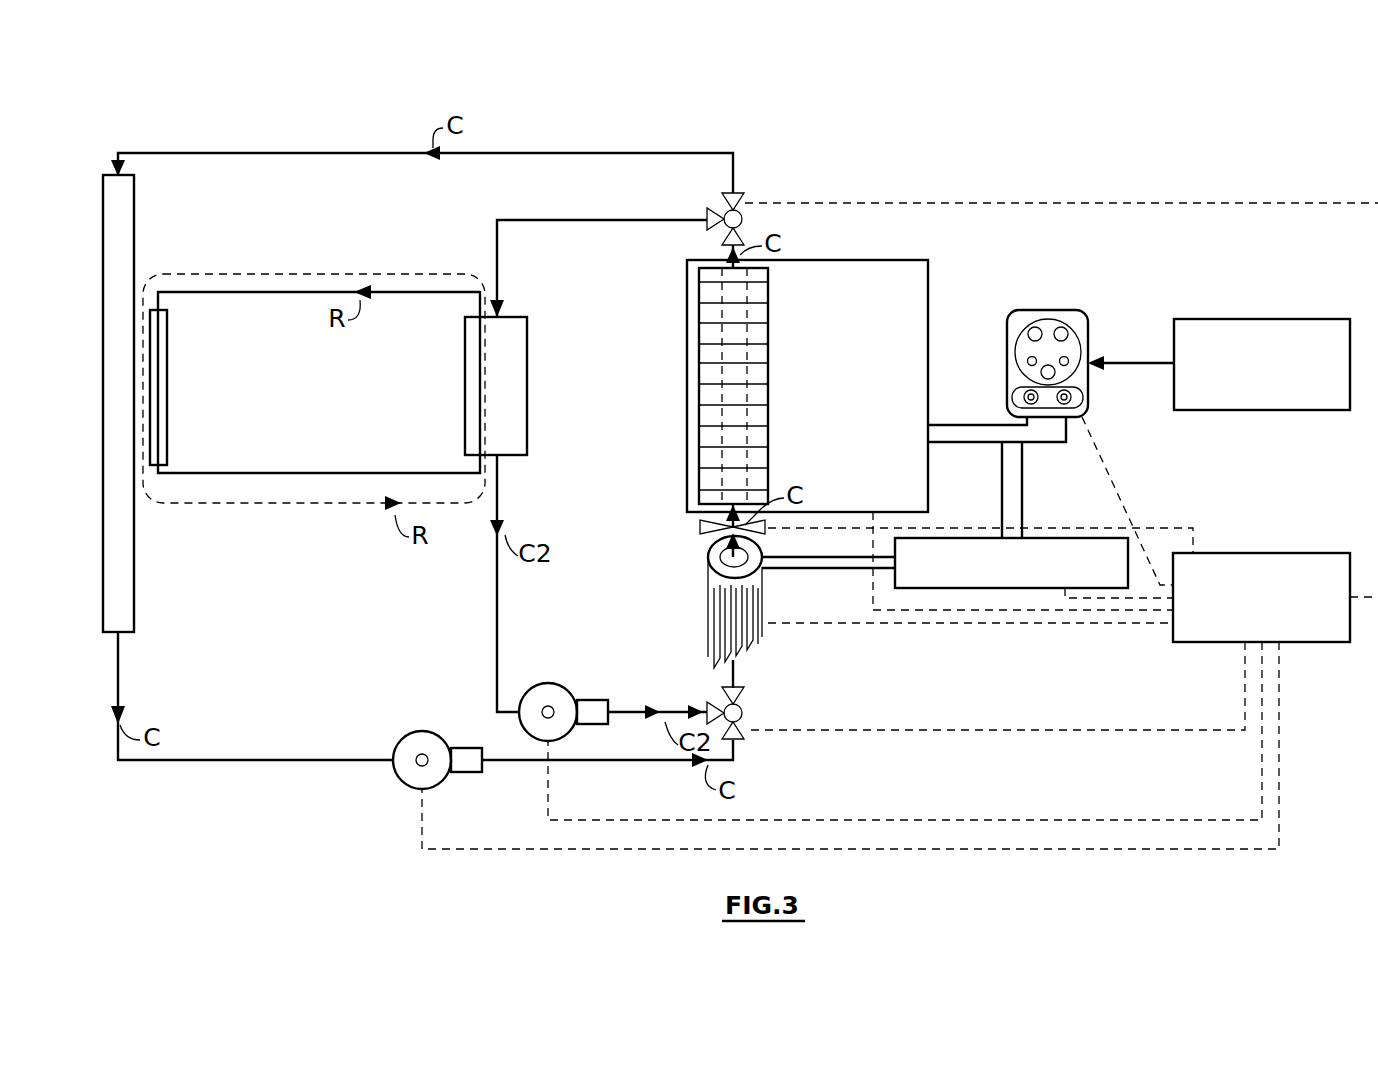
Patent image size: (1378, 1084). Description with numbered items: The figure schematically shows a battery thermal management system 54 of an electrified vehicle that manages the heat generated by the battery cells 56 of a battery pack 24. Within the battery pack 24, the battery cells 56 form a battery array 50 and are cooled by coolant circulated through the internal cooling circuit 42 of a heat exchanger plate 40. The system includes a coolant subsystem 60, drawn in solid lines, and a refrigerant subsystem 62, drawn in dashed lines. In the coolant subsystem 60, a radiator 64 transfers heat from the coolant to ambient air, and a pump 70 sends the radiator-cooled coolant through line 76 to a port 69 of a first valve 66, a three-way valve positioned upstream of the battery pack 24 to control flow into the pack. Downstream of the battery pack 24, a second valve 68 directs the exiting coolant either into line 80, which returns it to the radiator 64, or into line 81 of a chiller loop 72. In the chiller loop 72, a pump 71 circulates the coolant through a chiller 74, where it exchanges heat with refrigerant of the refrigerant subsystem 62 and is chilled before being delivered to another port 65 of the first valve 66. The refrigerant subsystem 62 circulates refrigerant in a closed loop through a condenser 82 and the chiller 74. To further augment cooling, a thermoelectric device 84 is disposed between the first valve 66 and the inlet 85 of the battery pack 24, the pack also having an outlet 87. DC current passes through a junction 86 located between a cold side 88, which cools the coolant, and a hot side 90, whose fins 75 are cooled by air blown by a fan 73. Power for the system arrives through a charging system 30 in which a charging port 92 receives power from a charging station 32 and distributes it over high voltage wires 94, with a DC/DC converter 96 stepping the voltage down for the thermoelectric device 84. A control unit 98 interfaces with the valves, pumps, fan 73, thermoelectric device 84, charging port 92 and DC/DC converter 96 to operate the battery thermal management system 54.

The battery pack 24 is at (822, 243).
The charging system 30 is at (1105, 292).
The charging station 32 is at (1292, 319).
The heat exchanger plate 40 is at (885, 260).
The internal cooling circuit 42 is at (733, 393).
The battery array 50 is at (770, 305).
The battery thermal management system 54 is at (797, 133).
The battery cells 56 is at (768, 462).
The coolant subsystem 60 is at (268, 766).
The refrigerant subsystem 62 is at (287, 273).
The radiator 64 is at (103, 395).
The port 65 is at (700, 705).
The first valve 66 is at (748, 713).
The second valve 68 is at (746, 218).
The port 69 is at (740, 750).
The pump 70 is at (400, 785).
The pump 71 is at (549, 683).
The chiller loop 72 is at (590, 213).
The fan 73 is at (715, 540).
The chiller 74 is at (527, 384).
The fins 75 is at (740, 630).
The line 76 is at (330, 760).
The line 80 is at (640, 153).
The line 81 is at (635, 222).
The condenser 82 is at (167, 385).
The thermoelectric device 84 is at (692, 615).
The inlet 85 is at (690, 524).
The junction 86 is at (760, 575).
The outlet 87 is at (708, 243).
The cold side 88 is at (760, 540).
The hot side 90 is at (765, 600).
The charging port 92 is at (1035, 310).
The high voltage wires 94 is at (948, 425).
The DC/DC converter 96 is at (1013, 588).
The control unit 98 is at (1330, 642).